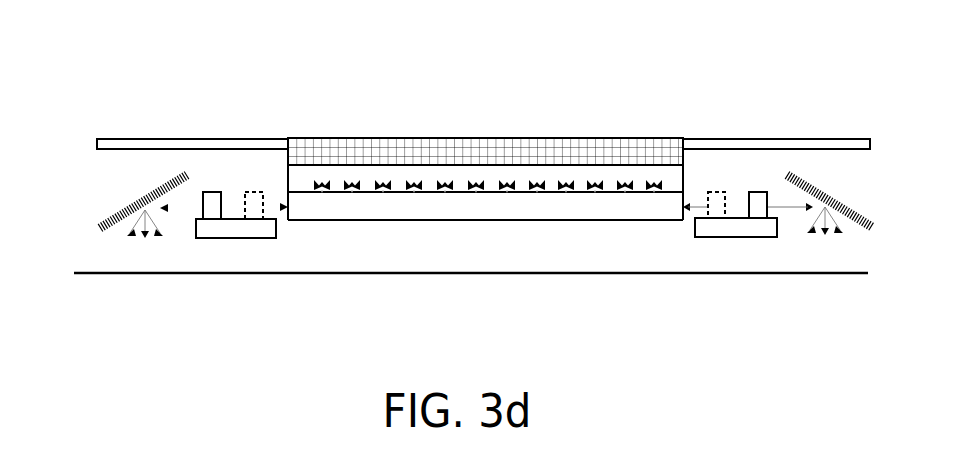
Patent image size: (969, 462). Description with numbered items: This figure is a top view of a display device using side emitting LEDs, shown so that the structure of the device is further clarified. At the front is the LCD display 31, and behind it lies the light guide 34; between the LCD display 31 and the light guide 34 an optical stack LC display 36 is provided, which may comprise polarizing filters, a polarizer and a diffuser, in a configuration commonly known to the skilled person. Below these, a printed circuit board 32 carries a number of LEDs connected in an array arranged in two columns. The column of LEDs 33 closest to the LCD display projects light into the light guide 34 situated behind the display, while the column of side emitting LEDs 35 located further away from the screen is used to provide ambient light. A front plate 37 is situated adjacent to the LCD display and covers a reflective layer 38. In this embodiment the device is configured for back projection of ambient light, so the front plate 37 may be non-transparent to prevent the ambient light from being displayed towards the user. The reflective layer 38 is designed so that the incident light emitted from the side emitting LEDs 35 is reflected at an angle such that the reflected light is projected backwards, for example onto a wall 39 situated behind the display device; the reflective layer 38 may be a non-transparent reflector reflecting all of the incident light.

The LCD display 31 is at (653, 146).
The printed circuit board 32 is at (242, 238).
The LEDs 33 is at (255, 192).
The light guide 34 is at (661, 205).
The side emitting LEDs 35 is at (212, 192).
The optical stack LC display 36 is at (556, 187).
The front plate 37 is at (144, 138).
The reflective layer 38 is at (135, 207).
The wall 39 is at (535, 273).